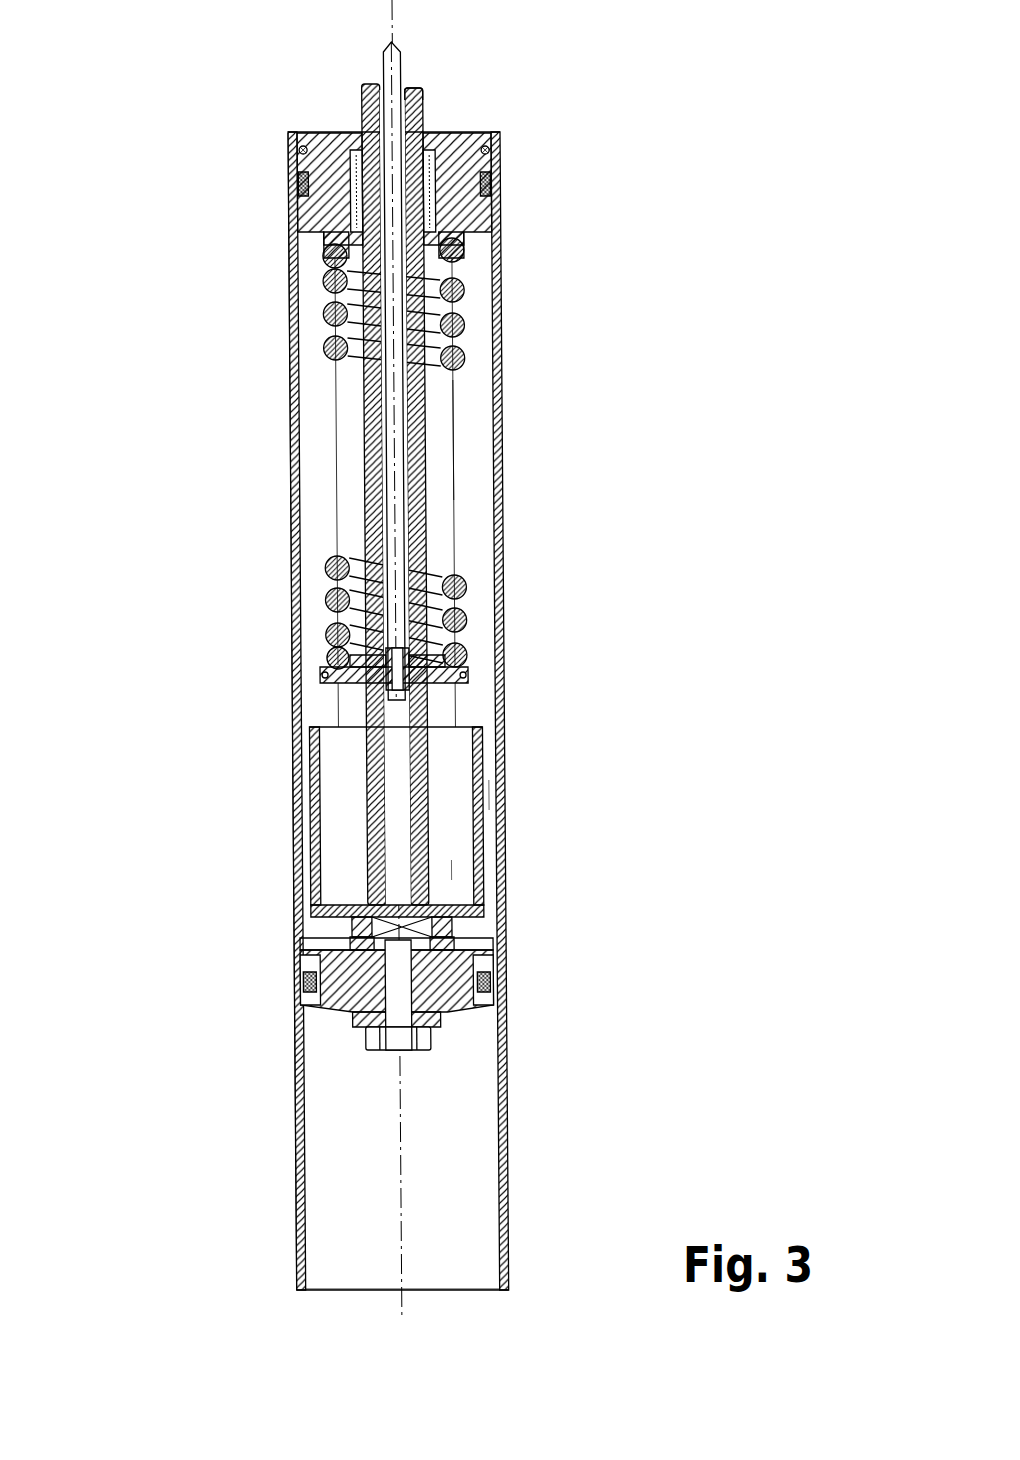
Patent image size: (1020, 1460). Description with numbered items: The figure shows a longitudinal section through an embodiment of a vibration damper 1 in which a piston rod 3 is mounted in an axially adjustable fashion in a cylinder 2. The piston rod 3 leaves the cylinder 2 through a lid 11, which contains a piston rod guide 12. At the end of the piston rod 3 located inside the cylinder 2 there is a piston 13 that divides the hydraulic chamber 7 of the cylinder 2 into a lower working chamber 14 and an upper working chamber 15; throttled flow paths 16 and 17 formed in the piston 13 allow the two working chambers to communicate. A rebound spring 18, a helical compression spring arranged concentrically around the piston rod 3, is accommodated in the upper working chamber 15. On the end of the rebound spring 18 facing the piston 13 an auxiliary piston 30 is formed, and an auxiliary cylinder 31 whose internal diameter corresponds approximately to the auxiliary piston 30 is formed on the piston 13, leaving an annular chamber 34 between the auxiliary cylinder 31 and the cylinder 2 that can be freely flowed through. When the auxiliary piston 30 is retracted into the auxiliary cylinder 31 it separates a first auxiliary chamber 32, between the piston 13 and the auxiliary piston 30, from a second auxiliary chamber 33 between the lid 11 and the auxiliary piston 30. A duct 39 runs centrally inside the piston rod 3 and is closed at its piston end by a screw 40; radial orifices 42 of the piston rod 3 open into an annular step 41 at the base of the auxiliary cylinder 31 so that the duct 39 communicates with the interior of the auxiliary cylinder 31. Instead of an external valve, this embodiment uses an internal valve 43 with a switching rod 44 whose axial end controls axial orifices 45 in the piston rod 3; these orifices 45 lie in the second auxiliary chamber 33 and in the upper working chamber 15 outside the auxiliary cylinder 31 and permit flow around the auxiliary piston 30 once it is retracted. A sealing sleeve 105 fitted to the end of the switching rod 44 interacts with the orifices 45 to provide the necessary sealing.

The vibration damper 1 is at (250, 208).
The cylinder 2 is at (287, 538).
The piston rod 3 is at (363, 407).
The hydraulic chamber 7 is at (330, 1170).
The lid 11 is at (463, 163).
The piston rod guide 12 is at (430, 210).
The piston 13 is at (447, 1013).
The lower working chamber 14 is at (447, 1233).
The upper working chamber 15 is at (468, 412).
The throttled flow path 16 is at (490, 1012).
The throttled flow path 17 is at (292, 1013).
The rebound spring 18 is at (318, 599).
The auxiliary piston 30 is at (468, 673).
The auxiliary cylinder 31 is at (313, 822).
The first auxiliary chamber 32 is at (447, 870).
The second auxiliary chamber 33 is at (472, 458).
The annular chamber 34 is at (487, 797).
The duct 39 is at (367, 717).
The screw 40 is at (408, 1043).
The annular step 41 is at (345, 934).
The radial orifices 42 is at (350, 910).
The internal valve 43 is at (412, 77).
The switching rod 44 is at (385, 68).
The axial orifices 45 is at (328, 651).
The sealing sleeve 105 is at (405, 685).